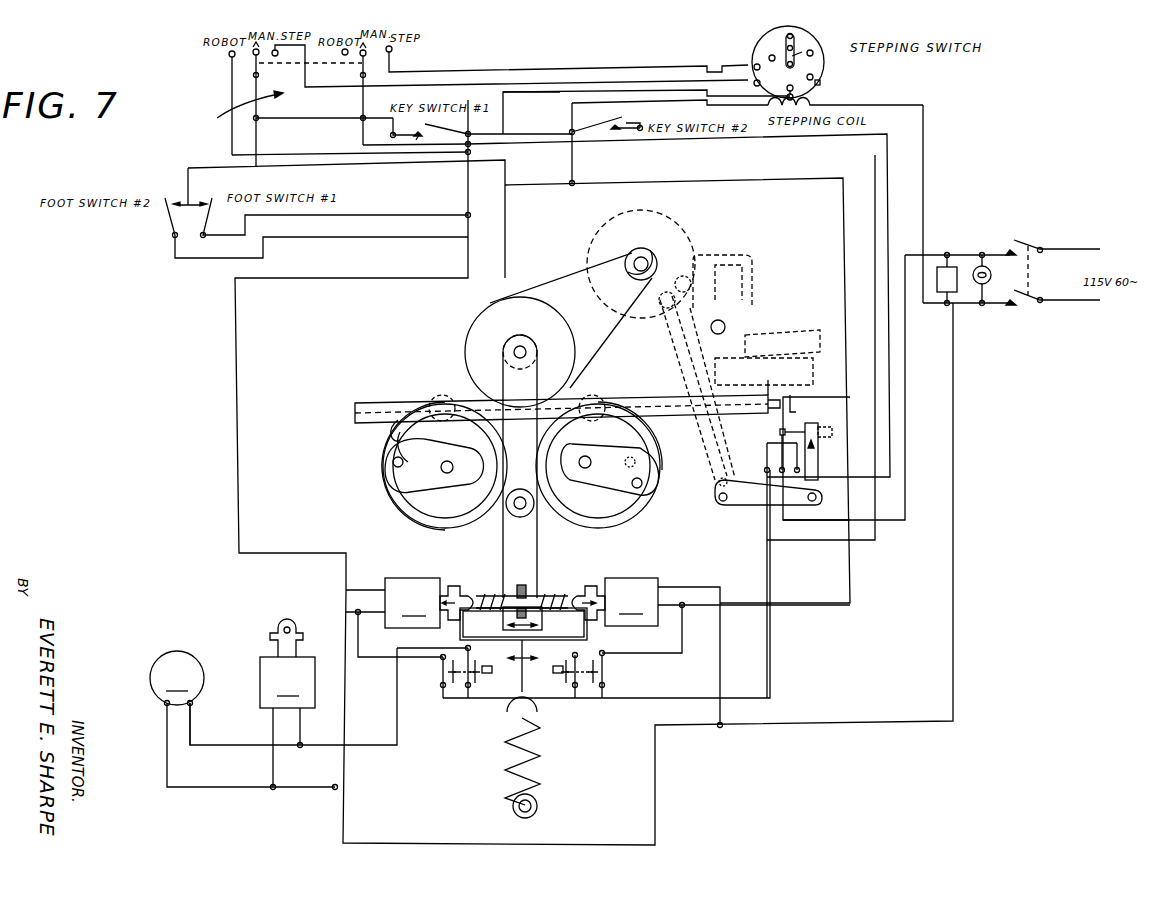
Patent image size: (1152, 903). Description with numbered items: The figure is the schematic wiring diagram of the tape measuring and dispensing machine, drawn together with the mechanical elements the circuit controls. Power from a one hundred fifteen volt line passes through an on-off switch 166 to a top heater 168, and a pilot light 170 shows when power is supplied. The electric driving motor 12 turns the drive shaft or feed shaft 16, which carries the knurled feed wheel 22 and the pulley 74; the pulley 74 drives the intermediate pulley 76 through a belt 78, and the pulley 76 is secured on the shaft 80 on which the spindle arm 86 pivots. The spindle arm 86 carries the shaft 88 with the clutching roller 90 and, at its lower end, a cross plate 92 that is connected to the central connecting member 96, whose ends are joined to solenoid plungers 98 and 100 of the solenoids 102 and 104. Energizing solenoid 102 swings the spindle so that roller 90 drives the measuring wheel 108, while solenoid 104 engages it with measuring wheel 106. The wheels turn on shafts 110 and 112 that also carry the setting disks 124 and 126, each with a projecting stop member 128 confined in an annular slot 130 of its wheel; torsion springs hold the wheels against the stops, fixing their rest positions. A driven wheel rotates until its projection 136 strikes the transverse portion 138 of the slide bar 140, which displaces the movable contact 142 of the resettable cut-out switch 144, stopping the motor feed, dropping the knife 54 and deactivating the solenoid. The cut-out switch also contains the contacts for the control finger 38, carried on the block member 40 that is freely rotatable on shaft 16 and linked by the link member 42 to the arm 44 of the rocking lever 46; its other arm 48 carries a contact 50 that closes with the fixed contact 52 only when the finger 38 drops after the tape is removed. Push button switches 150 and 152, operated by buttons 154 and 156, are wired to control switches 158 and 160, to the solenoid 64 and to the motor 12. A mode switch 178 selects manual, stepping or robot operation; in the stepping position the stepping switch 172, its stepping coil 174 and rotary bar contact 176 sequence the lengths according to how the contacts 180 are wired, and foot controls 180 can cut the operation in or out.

The electric driving motor 12 is at (242, 719).
The drive shaft or feed shaft 16 is at (634, 258).
The feed wheel or knurled roller 22 is at (618, 230).
The control finger or actuating finger 38 is at (752, 267).
The block member 40 is at (696, 252).
The link member 42 is at (700, 386).
The arm of rocking lever 44 is at (748, 503).
The rocking lever 46 is at (806, 504).
The arm of rocking lever 48 is at (826, 428).
The contact 50 is at (795, 408).
The fixed contact 52 is at (780, 432).
The knife 54 is at (700, 299).
The solenoid 64 is at (299, 704).
The pulley 74 is at (628, 276).
The intermediate pulley 76 is at (480, 340).
The belt 78 is at (600, 345).
The shaft 80 is at (522, 346).
The spindle arm 86 is at (540, 570).
The shaft 88 is at (514, 502).
The clutching roller or measuring drive roller 90 is at (520, 517).
The cross plate 92 is at (528, 614).
The central connecting member 96 is at (490, 598).
The solenoid plunger 98 is at (450, 586).
The solenoid plunger 100 is at (609, 586).
The solenoid 102 is at (412, 603).
The solenoid 104 is at (631, 602).
The measuring wheel 106 is at (628, 528).
The measuring wheel 108 is at (430, 530).
The rotatable shaft 110 is at (585, 456).
The rotatable shaft 112 is at (434, 466).
The setting disk or stop element 124 is at (652, 472).
The setting disk or stop element 126 is at (400, 440).
The projecting stop member 128 is at (392, 462).
The slot 130 is at (400, 504).
The projection or actuating element 136 is at (392, 405).
The transverse portion of slide bar 138 is at (440, 396).
The slide bar 140 is at (668, 392).
The movable contact member 142 is at (786, 378).
The resettable cut-out switch 144 is at (812, 458).
The switch 150 is at (415, 128).
The switch 152 is at (580, 129).
The push button control element 154 is at (446, 126).
The push button control element 156 is at (565, 103).
The control switch 158 is at (460, 705).
The control switch 160 is at (595, 703).
The on-off switch 166 is at (1030, 272).
The top heater 168 is at (948, 268).
The pilot light 170 is at (986, 284).
The stepping switch 172 is at (832, 68).
The stepping coil 174 is at (810, 104).
The rotary arm or bar contact 176 is at (795, 33).
The double pole double throw mode switch 178 is at (250, 104).
The contacts of stepping switch / foot control 180 is at (163, 233).